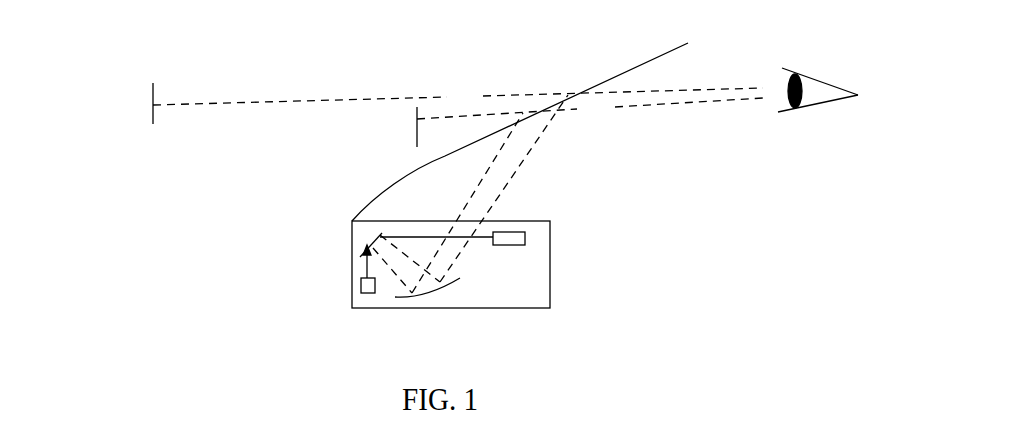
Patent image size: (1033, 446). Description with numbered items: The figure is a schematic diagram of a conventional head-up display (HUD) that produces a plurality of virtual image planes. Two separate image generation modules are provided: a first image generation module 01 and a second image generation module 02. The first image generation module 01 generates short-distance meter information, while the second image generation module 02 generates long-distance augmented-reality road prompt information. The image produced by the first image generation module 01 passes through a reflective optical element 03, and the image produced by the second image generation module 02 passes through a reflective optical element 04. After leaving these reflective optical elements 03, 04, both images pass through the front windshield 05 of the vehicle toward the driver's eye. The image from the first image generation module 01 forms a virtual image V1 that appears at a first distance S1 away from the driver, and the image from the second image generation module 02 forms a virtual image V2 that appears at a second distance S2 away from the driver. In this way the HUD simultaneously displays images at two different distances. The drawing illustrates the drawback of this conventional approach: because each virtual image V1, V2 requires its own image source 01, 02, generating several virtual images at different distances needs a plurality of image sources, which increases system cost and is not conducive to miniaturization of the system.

The first image generation module 01 is at (360, 287).
The second image generation module 02 is at (525, 237).
The reflective optical element 03 is at (370, 245).
The reflective optical element 04 is at (425, 296).
The front windshield 05 is at (598, 82).
The virtual image V1 is at (152, 101).
The virtual image V2 is at (416, 141).
The first distance S1 is at (458, 95).
The second distance S2 is at (590, 111).